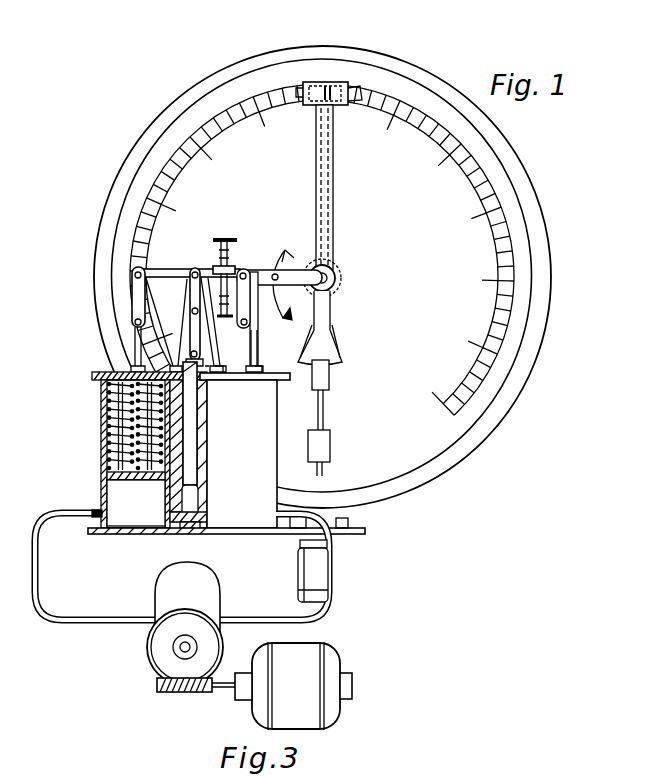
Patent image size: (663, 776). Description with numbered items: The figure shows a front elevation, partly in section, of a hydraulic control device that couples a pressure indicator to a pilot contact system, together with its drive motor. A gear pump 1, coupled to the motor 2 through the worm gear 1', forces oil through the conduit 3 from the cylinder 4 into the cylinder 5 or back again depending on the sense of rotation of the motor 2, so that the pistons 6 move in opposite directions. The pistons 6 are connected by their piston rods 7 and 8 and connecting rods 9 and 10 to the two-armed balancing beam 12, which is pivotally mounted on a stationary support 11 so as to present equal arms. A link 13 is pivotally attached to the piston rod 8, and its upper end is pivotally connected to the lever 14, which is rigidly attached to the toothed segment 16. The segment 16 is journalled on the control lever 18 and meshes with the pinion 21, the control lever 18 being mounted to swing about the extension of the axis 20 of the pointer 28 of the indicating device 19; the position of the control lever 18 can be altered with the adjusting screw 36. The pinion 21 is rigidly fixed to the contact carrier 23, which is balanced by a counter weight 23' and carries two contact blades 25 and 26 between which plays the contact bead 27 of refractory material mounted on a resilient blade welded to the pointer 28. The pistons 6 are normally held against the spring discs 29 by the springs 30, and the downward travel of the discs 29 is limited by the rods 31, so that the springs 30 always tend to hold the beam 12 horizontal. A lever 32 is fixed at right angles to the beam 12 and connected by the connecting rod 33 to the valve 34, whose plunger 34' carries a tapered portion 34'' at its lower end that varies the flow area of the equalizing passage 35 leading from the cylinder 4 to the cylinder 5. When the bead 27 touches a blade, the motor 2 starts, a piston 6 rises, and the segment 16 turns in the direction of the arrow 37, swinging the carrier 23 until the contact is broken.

In FIG. 1, the gear pump 1 is at (190, 623).
In FIG. 1, the worm gear 1' is at (196, 702).
In FIG. 3, the motor 2 is at (310, 720).
In FIG. 1, the conduit 3 is at (38, 571).
In FIG. 1, the cylinder 4 is at (108, 505).
In FIG. 1, the cylinder 5 is at (274, 446).
In FIG. 1, the pistons 6 is at (108, 482).
In FIG. 1, the piston rod 7 is at (133, 345).
In FIG. 1, the piston rod 8 is at (256, 352).
In FIG. 1, the connecting rod 9 is at (132, 286).
In FIG. 1, the connecting rod 10 is at (256, 296).
In FIG. 1, the stationary support 11 is at (192, 268).
In FIG. 1, the balancing beam 12 is at (160, 269).
In FIG. 1, the link 13 is at (250, 321).
In FIG. 1, the lever 14 is at (256, 271).
In FIG. 1, the toothed segment 16 is at (289, 271).
In FIG. 1, the control lever 18 is at (238, 266).
In FIG. 1, the indicating device 19 is at (521, 181).
In FIG. 1, the axis 20 is at (334, 273).
In FIG. 1, the pinion 21 is at (334, 288).
In FIG. 1, the contact carrier 23 is at (346, 187).
In FIG. 1, the counter weight 23' is at (338, 418).
In FIG. 1, the contact blade 25 is at (306, 87).
In FIG. 1, the contact blade 26 is at (362, 99).
In FIG. 1, the contact bead 27 is at (338, 90).
In FIG. 1, the pointer 28 is at (331, 356).
In FIG. 1, the spring discs 29 is at (105, 472).
In FIG. 1, the springs 30 is at (101, 420).
In FIG. 1, the rods 31 is at (108, 390).
In FIG. 1, the lever 32 is at (190, 300).
In FIG. 1, the connecting rod 33 is at (211, 340).
In FIG. 1, the valve 34 is at (216, 445).
In FIG. 1, the plunger 34' is at (216, 502).
In FIG. 1, the tapered portion 34'' is at (207, 541).
In FIG. 1, the equalizing passage 35 is at (174, 524).
In FIG. 1, the adjusting screw 36 is at (220, 252).
In FIG. 1, the arrow 37 is at (286, 320).